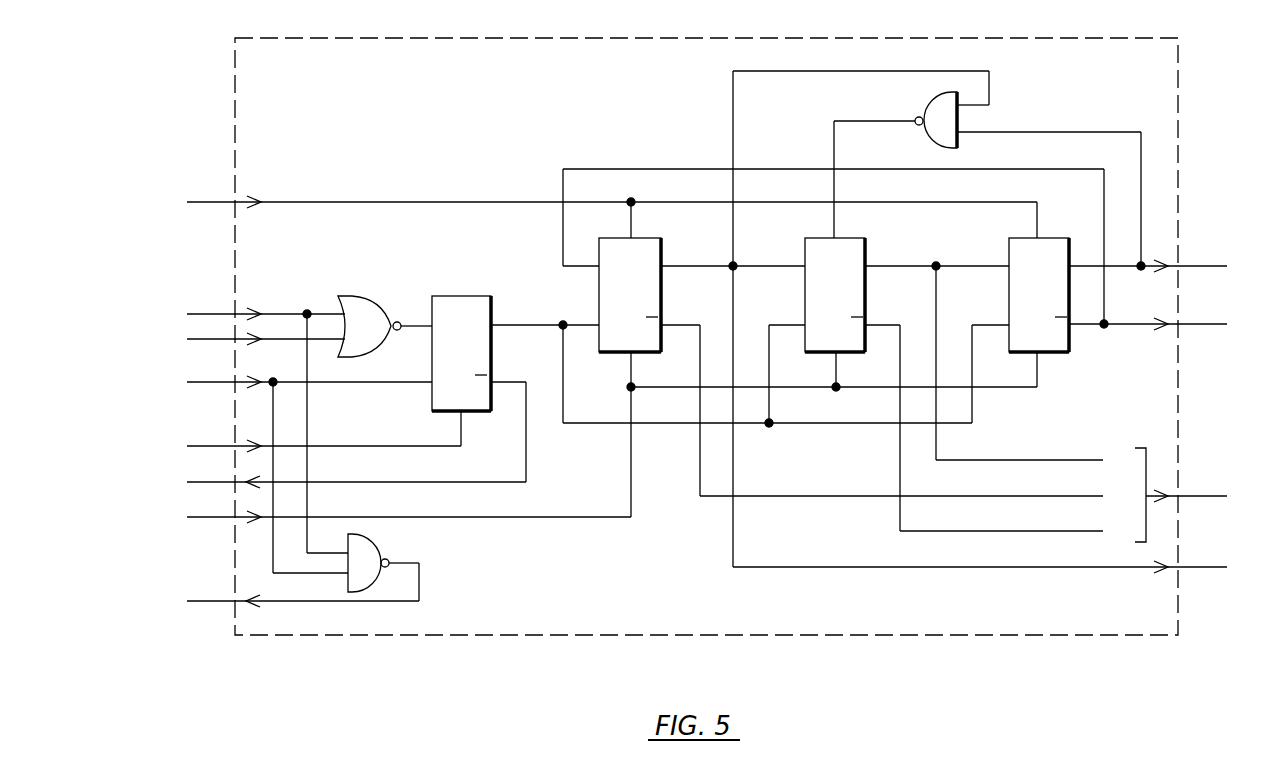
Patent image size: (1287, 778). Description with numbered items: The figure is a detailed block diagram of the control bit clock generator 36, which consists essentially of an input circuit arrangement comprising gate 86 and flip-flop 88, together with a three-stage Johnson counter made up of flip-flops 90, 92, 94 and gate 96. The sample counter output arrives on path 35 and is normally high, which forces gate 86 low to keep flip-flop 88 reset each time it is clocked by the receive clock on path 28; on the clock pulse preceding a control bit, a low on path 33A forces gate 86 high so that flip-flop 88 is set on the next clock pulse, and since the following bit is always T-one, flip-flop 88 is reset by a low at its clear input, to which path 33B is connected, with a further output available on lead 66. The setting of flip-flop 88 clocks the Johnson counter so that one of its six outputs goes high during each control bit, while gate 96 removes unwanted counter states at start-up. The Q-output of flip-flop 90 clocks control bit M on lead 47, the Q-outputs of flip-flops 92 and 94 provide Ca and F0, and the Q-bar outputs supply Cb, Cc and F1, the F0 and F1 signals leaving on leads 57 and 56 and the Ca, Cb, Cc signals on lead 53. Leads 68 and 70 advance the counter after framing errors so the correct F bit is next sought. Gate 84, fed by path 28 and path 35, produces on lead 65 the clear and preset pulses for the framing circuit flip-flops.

The control bit clock generator 36 is at (292, 79).
The lead 70 is at (209, 201).
The path 35 is at (210, 313).
The path 33A is at (210, 338).
The path 28 is at (210, 380).
The path 33B is at (210, 444).
The lead 66 is at (210, 481).
The lead 68 is at (210, 515).
The lead 65 is at (210, 599).
The gate 84 is at (370, 544).
The gate 86 is at (363, 298).
The flip-flop 88 is at (493, 352).
The flip-flop 90 is at (599, 288).
The flip-flop 92 is at (805, 288).
The flip-flop 94 is at (1009, 288).
The gate 96 is at (935, 95).
The lead 57 is at (1203, 266).
The lead 56 is at (1203, 324).
The lead 53 is at (1203, 496).
The lead 47 is at (1203, 567).